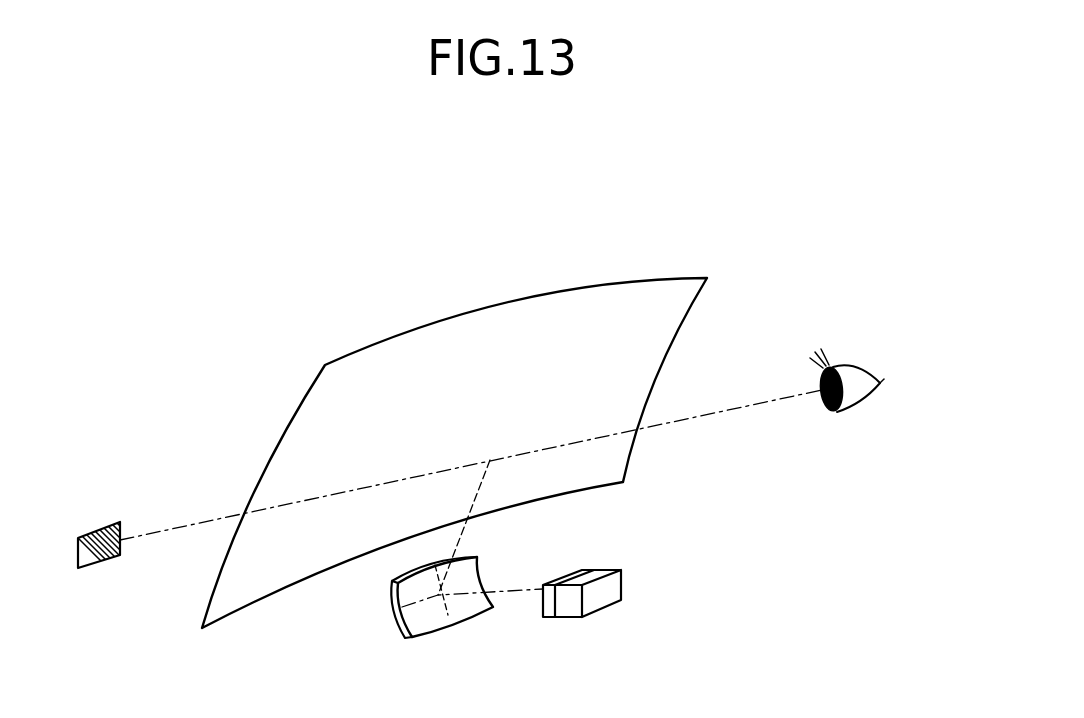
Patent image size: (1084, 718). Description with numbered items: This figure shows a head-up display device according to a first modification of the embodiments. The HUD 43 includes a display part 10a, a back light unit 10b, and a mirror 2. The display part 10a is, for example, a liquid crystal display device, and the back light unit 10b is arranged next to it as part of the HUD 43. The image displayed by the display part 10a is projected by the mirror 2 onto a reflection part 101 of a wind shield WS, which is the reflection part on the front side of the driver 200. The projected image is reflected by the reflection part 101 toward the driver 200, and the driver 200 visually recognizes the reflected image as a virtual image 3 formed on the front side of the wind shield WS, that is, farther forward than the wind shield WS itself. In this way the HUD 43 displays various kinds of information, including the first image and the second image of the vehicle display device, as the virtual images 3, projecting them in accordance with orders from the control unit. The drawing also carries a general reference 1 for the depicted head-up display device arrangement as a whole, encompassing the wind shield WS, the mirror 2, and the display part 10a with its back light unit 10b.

The head-up display device 1 is at (295, 235).
The wind shield WS is at (595, 280).
The reflection part 101 is at (498, 442).
The mirror 2 is at (395, 627).
The HUD 43 is at (598, 623).
The display part 10a is at (548, 612).
The back light unit 10b is at (612, 587).
The virtual image 3 is at (105, 530).
The driver 200 is at (850, 350).